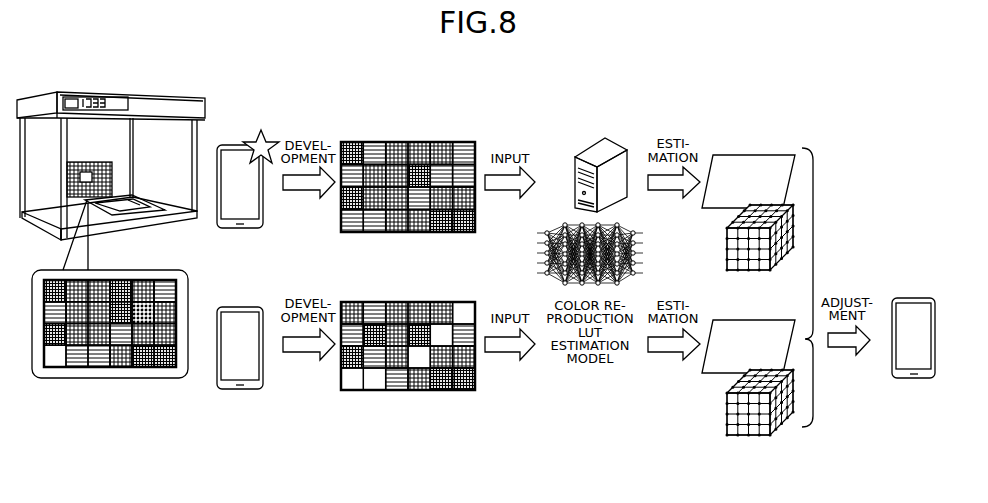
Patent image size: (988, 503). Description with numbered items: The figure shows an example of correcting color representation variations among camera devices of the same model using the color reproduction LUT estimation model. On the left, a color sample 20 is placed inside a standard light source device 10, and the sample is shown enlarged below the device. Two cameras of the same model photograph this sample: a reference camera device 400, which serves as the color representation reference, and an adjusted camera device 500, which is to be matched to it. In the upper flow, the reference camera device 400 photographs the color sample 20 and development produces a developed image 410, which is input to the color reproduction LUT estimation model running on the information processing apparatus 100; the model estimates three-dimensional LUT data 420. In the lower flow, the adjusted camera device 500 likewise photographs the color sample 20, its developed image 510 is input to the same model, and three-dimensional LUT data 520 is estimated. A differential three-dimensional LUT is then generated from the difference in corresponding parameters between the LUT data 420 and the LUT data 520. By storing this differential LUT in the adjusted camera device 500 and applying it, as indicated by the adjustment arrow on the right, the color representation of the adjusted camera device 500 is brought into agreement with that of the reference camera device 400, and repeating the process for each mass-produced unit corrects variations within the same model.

The standard light source device 10 is at (108, 92).
The color sample 20 is at (120, 368).
The reference camera device 400 is at (240, 145).
The developed image 410 is at (452, 142).
The information processing apparatus 100 is at (591, 142).
The 3D-LUT data 420 is at (760, 155).
The adjusted camera device 500 is at (240, 307).
The developed image 510 is at (452, 302).
The 3D-LUT data 520 is at (760, 320).